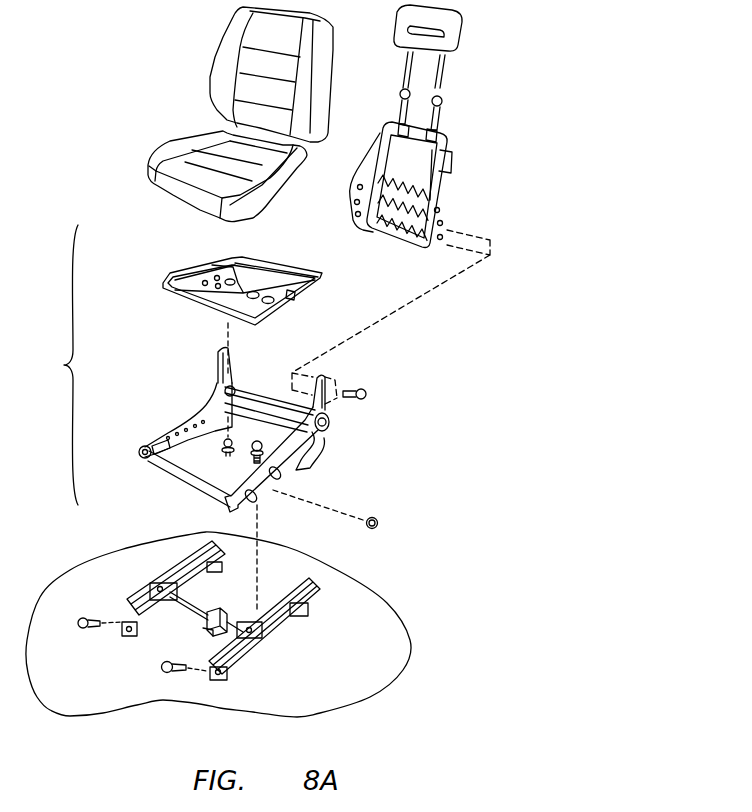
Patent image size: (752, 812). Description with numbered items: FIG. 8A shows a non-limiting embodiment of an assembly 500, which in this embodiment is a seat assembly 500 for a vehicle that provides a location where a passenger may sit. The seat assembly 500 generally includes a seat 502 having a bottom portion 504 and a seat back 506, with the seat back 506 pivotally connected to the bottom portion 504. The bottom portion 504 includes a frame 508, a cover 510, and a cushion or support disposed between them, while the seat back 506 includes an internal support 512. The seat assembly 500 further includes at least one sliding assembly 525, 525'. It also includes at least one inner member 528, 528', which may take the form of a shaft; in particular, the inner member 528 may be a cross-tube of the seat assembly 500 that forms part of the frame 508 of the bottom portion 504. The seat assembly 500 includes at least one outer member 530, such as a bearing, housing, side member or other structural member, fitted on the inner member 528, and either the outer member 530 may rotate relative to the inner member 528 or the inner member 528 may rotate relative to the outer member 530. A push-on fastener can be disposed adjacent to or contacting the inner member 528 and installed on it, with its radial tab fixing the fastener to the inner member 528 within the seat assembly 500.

The seat assembly 500 is at (518, 49).
The seat 502 is at (140, 76).
The bottom portion 504 is at (50, 365).
The seat back 506 is at (335, 72).
The frame 508 is at (243, 400).
The cover 510 is at (265, 200).
The internal support 512 is at (450, 175).
The sliding assembly 525 is at (218, 624).
The sliding assembly 525' is at (208, 607).
The inner member 528 is at (302, 443).
The inner member 528' is at (180, 403).
The outer member 530 is at (338, 403).